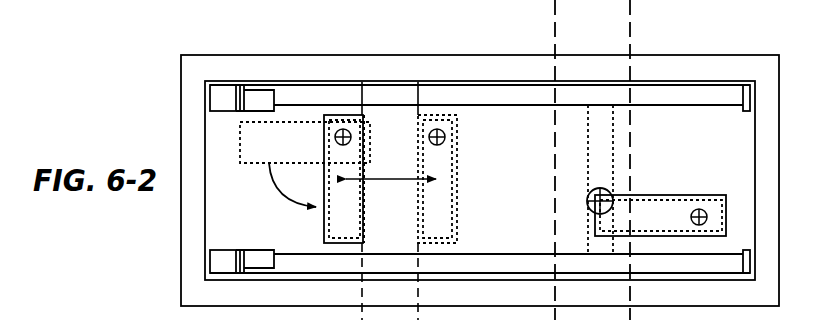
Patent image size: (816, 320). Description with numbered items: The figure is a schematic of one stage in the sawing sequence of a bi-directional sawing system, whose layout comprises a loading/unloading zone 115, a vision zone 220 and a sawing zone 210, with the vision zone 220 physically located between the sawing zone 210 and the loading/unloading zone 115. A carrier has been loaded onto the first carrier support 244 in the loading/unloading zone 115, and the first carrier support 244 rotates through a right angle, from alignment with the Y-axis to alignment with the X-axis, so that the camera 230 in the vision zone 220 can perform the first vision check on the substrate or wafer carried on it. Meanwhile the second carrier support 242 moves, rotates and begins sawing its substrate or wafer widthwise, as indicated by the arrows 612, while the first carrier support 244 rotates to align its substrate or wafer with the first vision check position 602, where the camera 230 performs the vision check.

The loading/unloading zone 115 is at (704, 54).
The sawing zone 210 is at (456, 54).
The vision zone 220 is at (594, 54).
The camera 230 is at (591, 195).
The second carrier support 242 is at (324, 229).
The first carrier support 244 is at (649, 194).
The first vision check position 602 is at (588, 205).
The arrows 612 is at (400, 183).